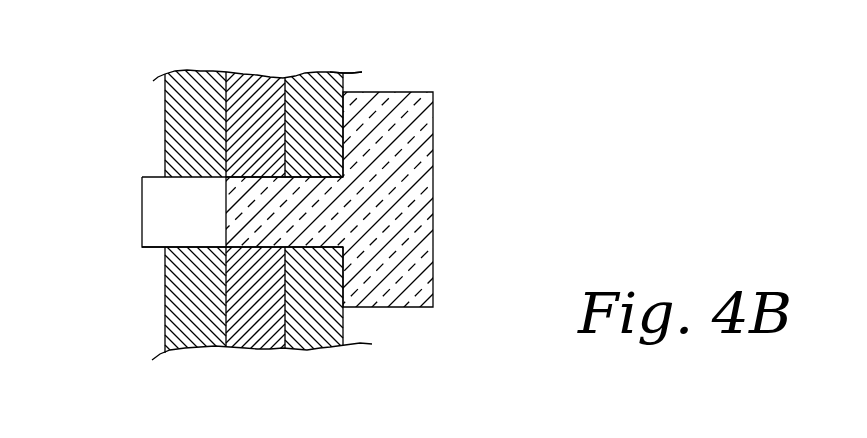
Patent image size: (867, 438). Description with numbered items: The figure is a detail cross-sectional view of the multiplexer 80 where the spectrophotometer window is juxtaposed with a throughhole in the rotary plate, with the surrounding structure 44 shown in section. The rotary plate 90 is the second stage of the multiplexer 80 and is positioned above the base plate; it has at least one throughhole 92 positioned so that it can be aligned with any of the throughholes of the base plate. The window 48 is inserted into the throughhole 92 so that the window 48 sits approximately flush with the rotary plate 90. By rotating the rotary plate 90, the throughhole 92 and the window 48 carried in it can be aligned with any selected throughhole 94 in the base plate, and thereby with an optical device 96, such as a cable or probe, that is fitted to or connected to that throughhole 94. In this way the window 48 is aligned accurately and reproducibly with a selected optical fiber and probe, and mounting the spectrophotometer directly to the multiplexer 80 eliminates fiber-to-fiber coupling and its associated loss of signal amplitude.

The substrate 44 is at (345, 80).
The window 48 is at (433, 227).
The multiplexer 80 is at (165, 95).
The rotary plate 90 is at (287, 308).
The throughhole 92 is at (243, 252).
The throughhole 94 is at (194, 247).
The optical device 96 is at (142, 193).